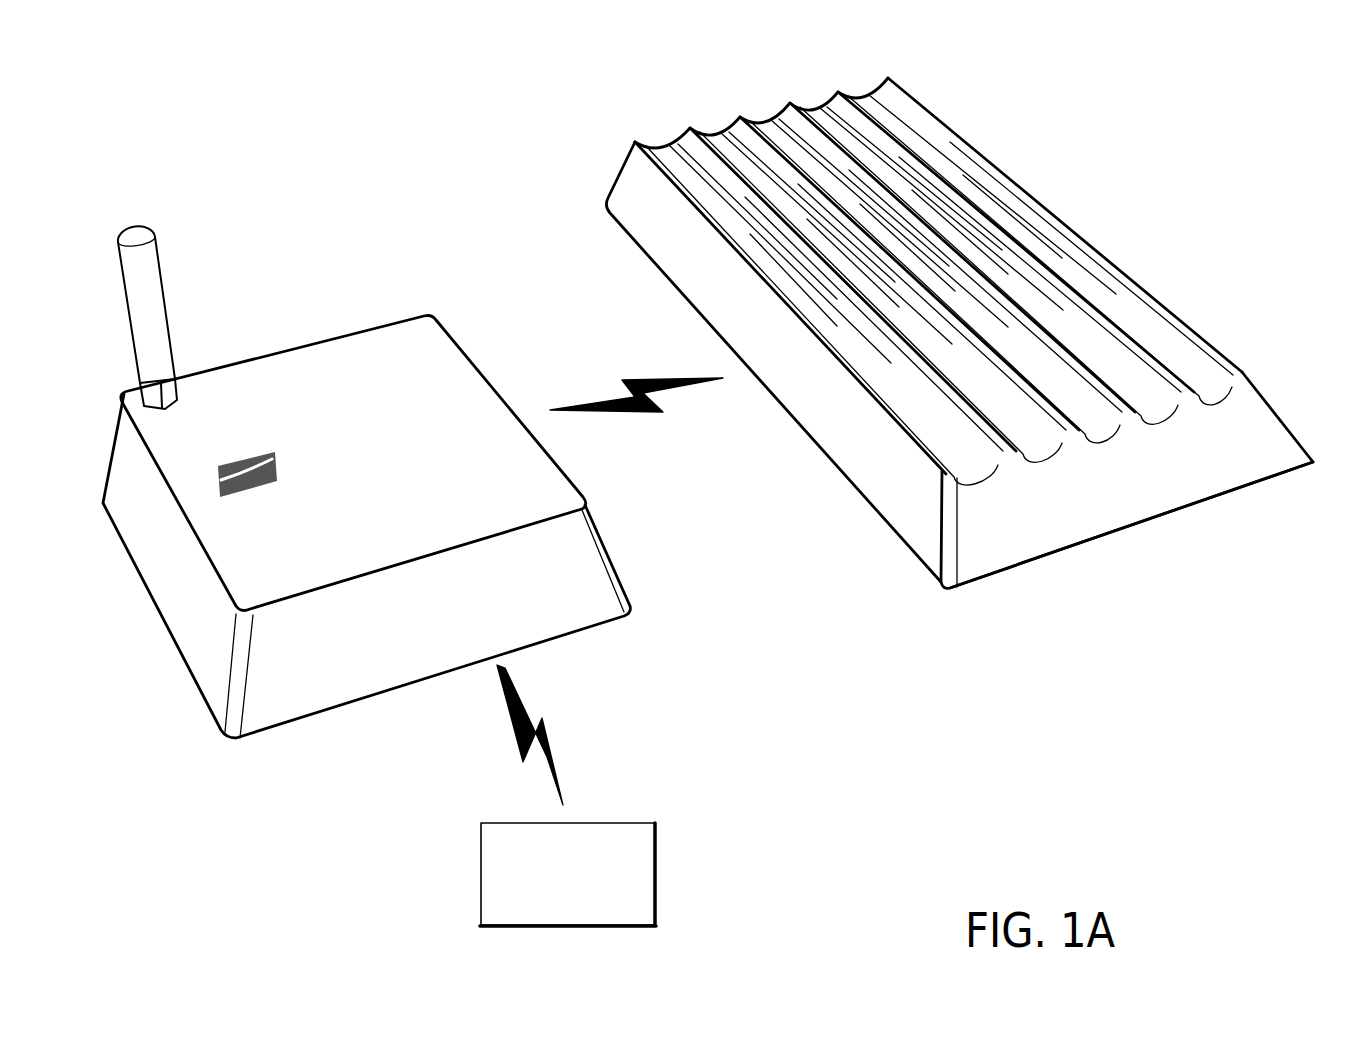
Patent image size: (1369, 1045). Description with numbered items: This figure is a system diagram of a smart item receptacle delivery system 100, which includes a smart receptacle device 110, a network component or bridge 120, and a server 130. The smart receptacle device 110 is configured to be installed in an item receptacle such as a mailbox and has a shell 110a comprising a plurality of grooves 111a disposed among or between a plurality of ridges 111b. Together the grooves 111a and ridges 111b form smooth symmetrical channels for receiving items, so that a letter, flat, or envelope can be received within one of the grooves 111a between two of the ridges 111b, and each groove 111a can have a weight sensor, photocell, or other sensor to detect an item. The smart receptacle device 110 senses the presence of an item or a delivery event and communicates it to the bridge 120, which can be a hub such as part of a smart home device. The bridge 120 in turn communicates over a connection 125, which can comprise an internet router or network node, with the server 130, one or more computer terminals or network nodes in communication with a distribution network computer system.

The system 100 is at (734, 476).
The smart receptacle device 110 is at (958, 330).
The shell 110a is at (1238, 481).
The grooves 111a is at (818, 116).
The ridges 111b is at (688, 127).
The bridge 120 is at (294, 722).
The connection 125 is at (629, 380).
The server 130 is at (549, 911).